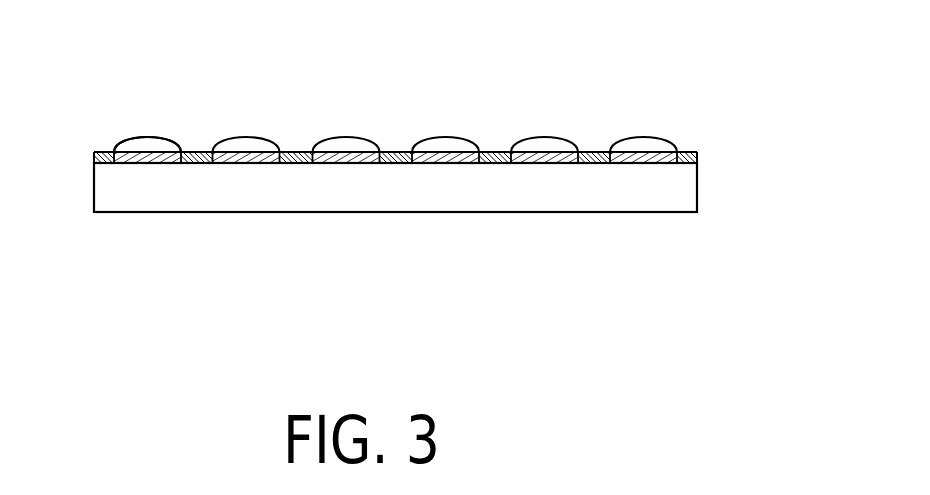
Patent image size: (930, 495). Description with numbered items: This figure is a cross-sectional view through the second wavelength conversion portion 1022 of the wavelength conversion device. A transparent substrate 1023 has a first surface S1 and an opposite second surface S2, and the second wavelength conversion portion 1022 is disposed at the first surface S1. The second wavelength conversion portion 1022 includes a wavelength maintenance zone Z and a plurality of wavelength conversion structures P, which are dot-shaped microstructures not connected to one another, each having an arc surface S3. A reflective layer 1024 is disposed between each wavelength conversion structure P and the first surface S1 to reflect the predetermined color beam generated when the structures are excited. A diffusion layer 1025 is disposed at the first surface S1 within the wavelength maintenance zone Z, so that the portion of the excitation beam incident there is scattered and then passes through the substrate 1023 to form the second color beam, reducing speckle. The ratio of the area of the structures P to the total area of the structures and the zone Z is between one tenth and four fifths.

The second wavelength conversion portion 1022 is at (118, 50).
The substrate 1023 is at (684, 289).
The reflective layer 1024 is at (150, 155).
The diffusion layer 1025 is at (290, 152).
The first surface S1 is at (646, 165).
The second surface S2 is at (598, 213).
The arc surface S3 is at (153, 137).